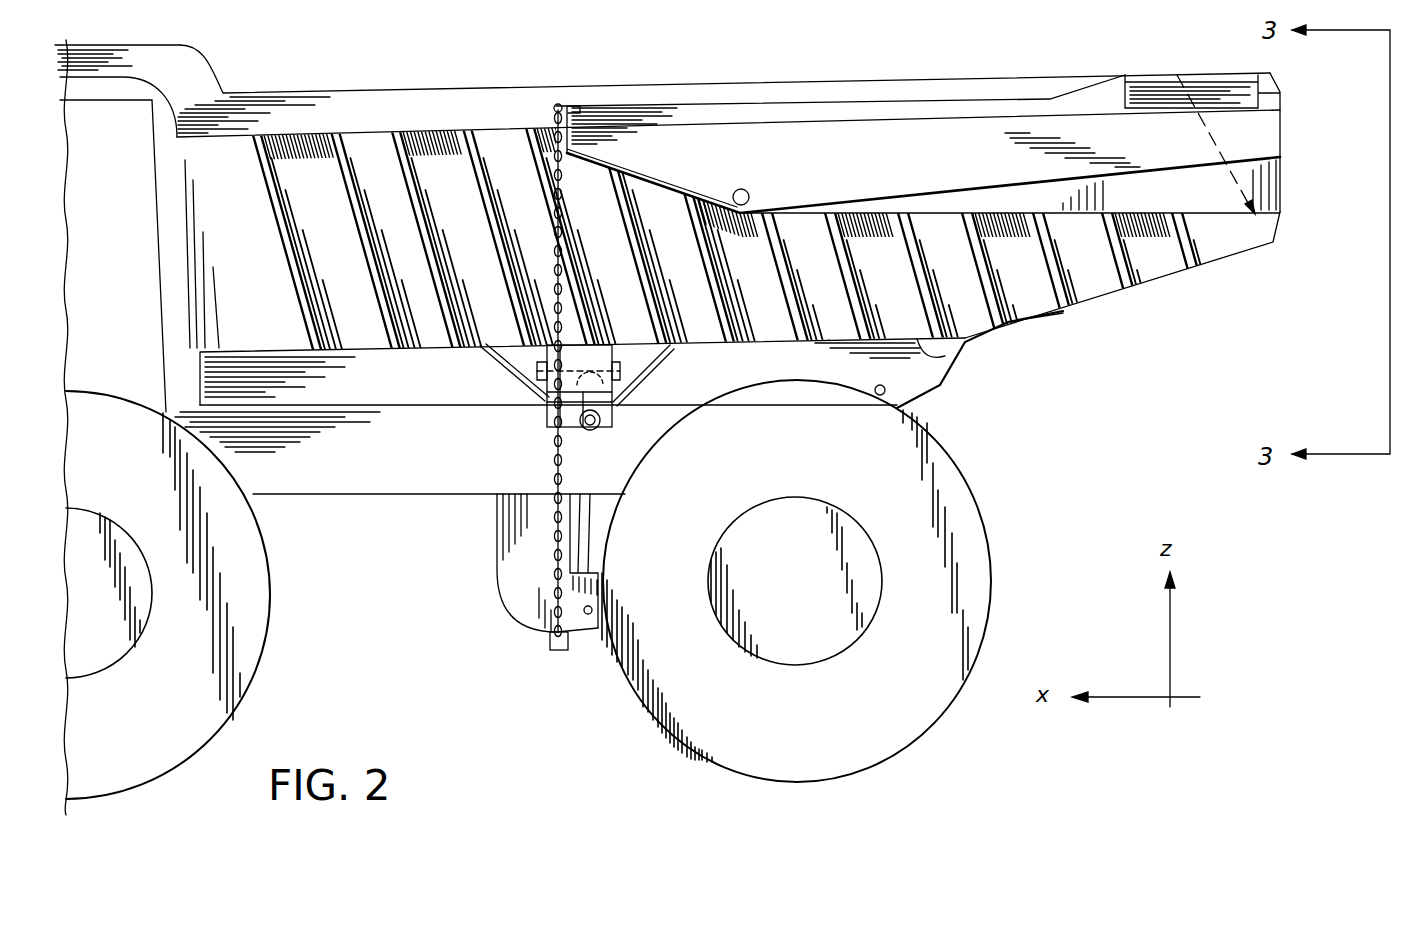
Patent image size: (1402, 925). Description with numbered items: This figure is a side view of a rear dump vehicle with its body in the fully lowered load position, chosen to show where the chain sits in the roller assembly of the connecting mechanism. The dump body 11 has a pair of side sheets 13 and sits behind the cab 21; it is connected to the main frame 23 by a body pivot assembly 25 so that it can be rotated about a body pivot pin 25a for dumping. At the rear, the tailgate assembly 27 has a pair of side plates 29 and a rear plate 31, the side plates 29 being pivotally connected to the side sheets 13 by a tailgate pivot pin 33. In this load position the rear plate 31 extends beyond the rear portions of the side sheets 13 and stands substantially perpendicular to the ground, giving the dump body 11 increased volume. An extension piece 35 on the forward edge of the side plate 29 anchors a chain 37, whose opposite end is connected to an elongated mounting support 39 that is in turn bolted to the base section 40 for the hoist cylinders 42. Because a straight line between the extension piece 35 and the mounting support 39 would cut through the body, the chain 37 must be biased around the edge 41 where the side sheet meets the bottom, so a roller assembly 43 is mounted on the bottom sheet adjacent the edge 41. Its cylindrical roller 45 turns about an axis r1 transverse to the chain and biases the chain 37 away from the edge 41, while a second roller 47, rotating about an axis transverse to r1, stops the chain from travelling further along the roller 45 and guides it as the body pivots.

The dump body 11 is at (297, 84).
The side sheets 13 is at (425, 100).
The cab 21 is at (131, 259).
The main frame 23 is at (327, 496).
The body pivot assembly 25 is at (943, 385).
The body pivot pin 25a is at (912, 412).
The tailgate assembly 27 is at (778, 106).
The side plates 29 is at (1193, 198).
The rear plate 31 is at (1282, 118).
The tailgate pivot pin 33 is at (744, 191).
The extension piece 35 is at (566, 104).
The chain 37 is at (557, 231).
The mounting support 39 is at (548, 638).
The base section 40 is at (517, 563).
The edge 41 is at (912, 380).
The hoist cylinders 42 is at (597, 530).
The roller assembly 43 is at (535, 417).
The cylindrical roller 45 is at (592, 358).
The roller 47 is at (582, 428).
The axis of rotation r1 is at (670, 361).